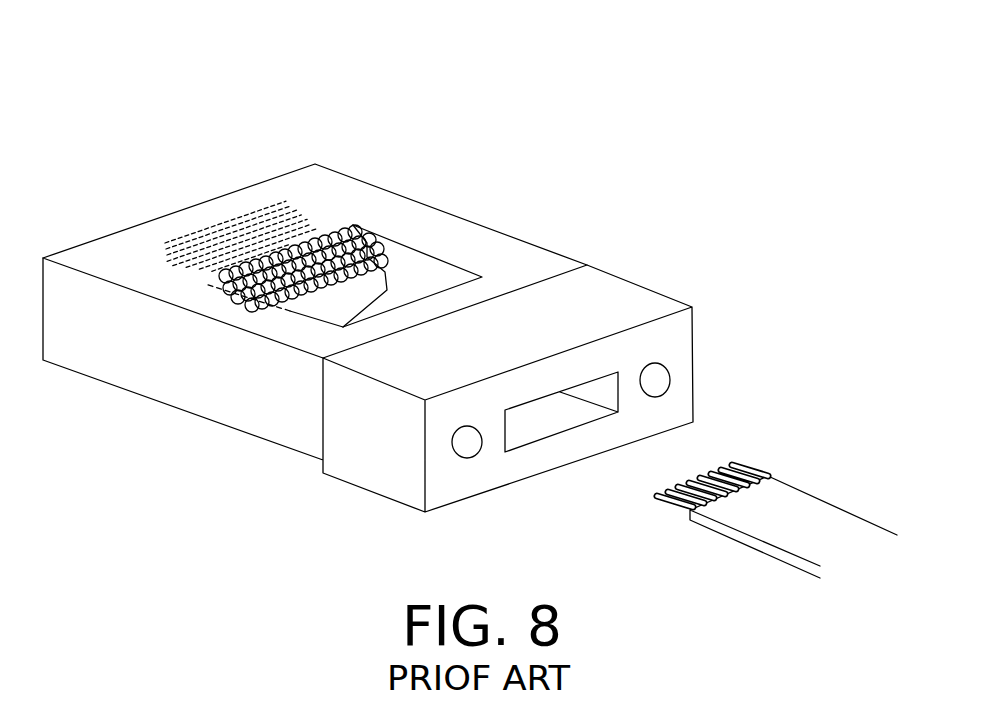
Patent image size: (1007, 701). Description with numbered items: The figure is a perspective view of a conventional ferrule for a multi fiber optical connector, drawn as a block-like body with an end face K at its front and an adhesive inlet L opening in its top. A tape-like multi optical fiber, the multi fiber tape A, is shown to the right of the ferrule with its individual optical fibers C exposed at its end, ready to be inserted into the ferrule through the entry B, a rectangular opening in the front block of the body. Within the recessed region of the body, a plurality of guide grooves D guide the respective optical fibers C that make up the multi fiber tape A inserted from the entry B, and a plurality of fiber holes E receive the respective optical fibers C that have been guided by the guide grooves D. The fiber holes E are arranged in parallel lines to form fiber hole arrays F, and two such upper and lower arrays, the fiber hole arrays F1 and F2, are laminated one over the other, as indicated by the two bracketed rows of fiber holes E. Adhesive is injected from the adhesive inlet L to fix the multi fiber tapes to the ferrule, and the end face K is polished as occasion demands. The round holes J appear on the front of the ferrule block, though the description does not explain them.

The end face K is at (108, 233).
The adhesive inlet L is at (458, 270).
The guide grooves D is at (425, 272).
The fiber holes E is at (335, 172).
The fiber hole arrays F is at (335, 172).
The fiber hole array F1 is at (323, 235).
The fiber hole array F2 is at (354, 240).
The hole J is at (467, 452).
The entry B is at (557, 440).
The optical fibers C is at (660, 502).
The multi fiber tape A is at (856, 500).